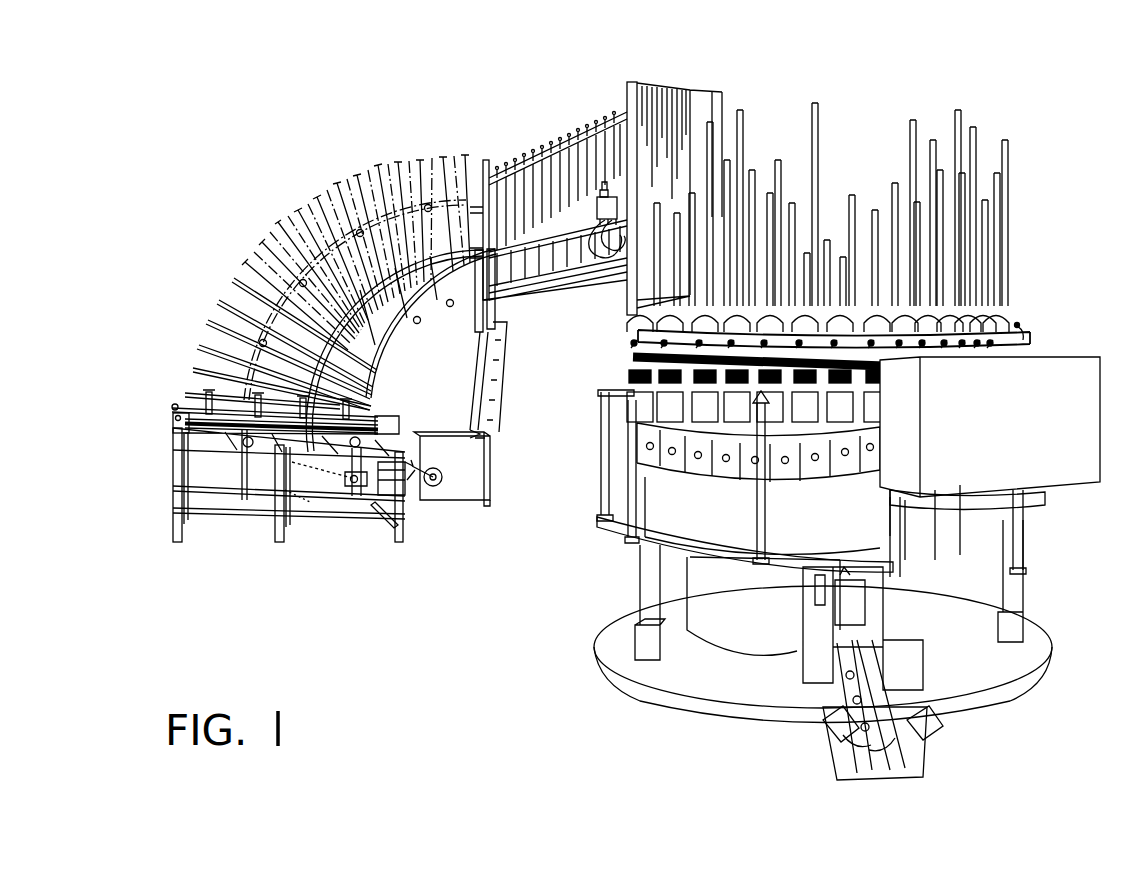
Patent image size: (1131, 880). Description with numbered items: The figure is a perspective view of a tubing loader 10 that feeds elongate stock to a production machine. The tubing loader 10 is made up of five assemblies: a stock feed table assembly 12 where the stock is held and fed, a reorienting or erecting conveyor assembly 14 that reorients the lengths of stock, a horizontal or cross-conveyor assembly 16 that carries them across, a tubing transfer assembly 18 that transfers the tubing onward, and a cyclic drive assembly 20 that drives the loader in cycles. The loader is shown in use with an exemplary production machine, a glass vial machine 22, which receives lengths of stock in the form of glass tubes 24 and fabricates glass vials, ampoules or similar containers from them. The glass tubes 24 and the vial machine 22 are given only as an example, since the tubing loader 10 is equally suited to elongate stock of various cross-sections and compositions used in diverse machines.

The tubing loader 10 is at (188, 553).
The stock feed table assembly 12 is at (331, 527).
The reorienting or erecting conveyor assembly 14 is at (228, 258).
The horizontal or cross-conveyor assembly 16 is at (562, 110).
The tubing transfer assembly 18 is at (622, 206).
The cyclic drive assembly 20 is at (438, 523).
The glass vial machine 22 is at (1038, 310).
The glass tubes 24 is at (1006, 142).